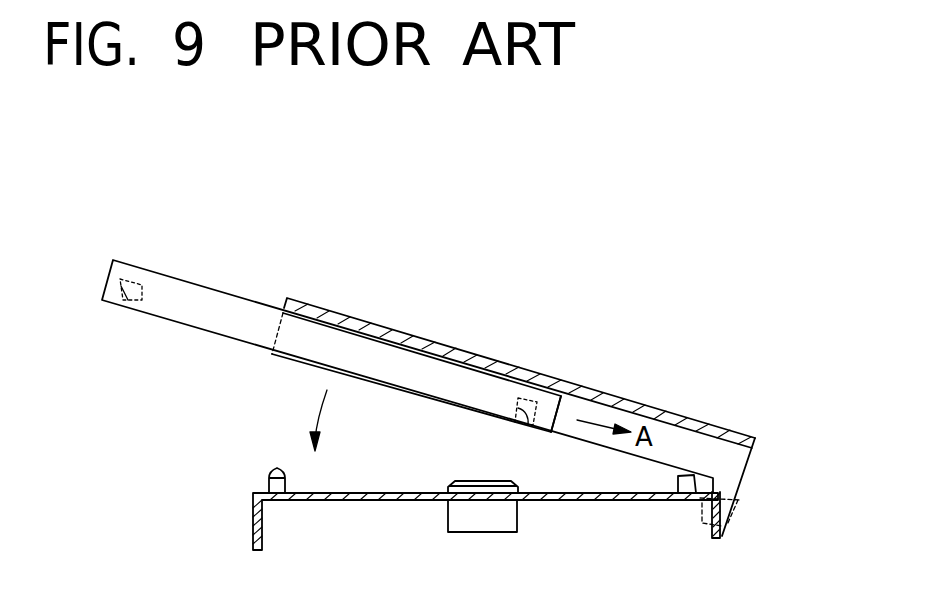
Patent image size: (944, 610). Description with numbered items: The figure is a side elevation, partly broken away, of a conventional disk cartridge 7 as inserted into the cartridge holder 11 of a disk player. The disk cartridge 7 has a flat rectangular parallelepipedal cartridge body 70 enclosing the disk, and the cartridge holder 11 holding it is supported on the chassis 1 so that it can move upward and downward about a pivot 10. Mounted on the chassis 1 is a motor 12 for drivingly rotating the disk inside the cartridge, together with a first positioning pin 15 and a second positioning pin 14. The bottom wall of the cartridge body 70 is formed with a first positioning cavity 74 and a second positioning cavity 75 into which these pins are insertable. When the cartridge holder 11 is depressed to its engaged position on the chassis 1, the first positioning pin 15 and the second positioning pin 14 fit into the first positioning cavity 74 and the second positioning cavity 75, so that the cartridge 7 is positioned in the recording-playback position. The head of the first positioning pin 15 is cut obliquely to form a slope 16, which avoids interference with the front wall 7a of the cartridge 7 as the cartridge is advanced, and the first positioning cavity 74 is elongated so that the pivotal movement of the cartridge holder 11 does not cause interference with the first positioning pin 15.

The chassis 1 is at (388, 503).
The disk cartridge 7 is at (235, 313).
The front wall 7a is at (557, 412).
The pivot 10 is at (728, 508).
The cartridge holder 11 is at (525, 377).
The motor 12 is at (512, 520).
The second positioning pin 14 is at (285, 487).
The first positioning pin 15 is at (677, 486).
The slope 16 is at (689, 474).
The cartridge body 70 is at (177, 298).
The first positioning cavity 74 is at (528, 432).
The second positioning cavity 75 is at (126, 302).